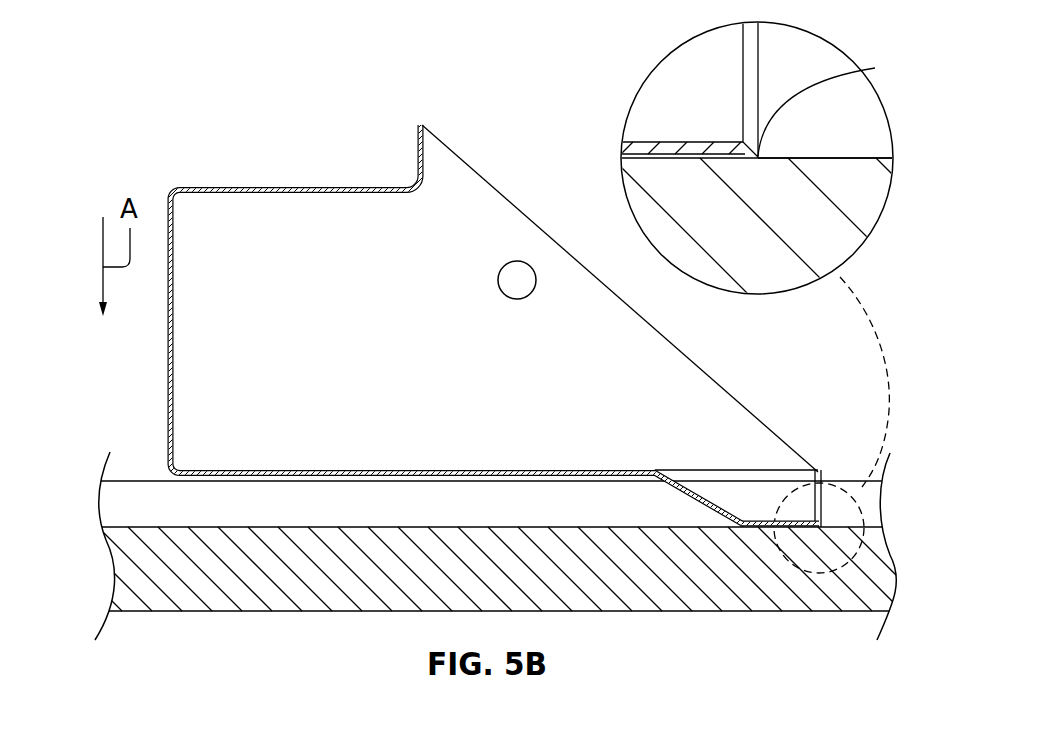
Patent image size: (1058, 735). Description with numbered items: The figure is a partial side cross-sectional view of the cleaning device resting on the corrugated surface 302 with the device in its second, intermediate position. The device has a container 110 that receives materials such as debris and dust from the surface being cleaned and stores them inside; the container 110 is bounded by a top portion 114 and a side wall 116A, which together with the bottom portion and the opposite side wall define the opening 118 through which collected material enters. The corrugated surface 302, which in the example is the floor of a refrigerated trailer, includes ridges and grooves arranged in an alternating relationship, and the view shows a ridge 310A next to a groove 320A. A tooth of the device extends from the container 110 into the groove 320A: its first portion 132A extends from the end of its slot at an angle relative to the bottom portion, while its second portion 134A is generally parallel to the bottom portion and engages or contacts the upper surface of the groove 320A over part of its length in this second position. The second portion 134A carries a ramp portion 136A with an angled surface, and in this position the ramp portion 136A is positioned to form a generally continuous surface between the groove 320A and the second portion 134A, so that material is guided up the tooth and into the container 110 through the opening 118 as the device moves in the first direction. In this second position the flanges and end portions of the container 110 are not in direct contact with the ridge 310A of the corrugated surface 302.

The container 110 is at (160, 151).
The top portion 114 is at (305, 187).
The side wall 116A is at (330, 340).
The opening 118 is at (461, 203).
The first portion 132A is at (698, 498).
The second portion 134A is at (797, 521).
The ramp portion 136A is at (852, 102).
The corrugated surface 302 is at (720, 603).
The ridge 310A is at (863, 502).
The groove 320A is at (181, 515).